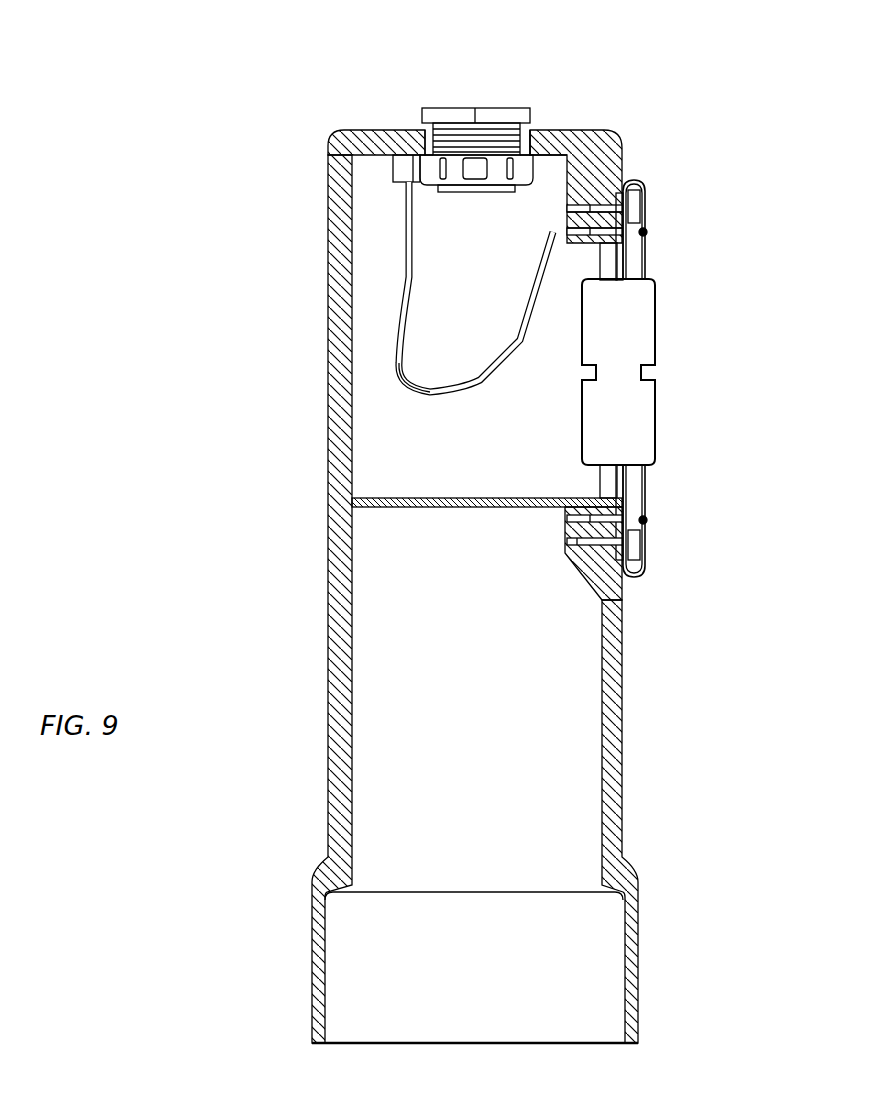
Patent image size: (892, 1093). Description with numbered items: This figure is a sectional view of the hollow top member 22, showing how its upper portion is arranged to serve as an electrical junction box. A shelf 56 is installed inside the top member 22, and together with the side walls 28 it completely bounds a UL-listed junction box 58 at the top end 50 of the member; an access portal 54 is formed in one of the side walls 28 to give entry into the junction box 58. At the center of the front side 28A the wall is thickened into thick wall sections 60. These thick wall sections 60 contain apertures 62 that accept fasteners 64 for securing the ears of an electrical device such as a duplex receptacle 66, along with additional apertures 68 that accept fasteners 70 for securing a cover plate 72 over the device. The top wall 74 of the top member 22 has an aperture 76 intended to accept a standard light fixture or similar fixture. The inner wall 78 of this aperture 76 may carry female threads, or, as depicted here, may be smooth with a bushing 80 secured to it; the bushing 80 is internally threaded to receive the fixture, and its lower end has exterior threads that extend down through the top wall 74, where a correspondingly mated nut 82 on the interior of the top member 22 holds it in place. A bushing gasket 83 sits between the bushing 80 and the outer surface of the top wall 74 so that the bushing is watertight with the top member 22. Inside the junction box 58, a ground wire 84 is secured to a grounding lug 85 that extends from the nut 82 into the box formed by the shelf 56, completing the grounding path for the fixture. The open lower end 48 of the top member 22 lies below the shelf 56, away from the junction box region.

The top member 22 is at (245, 478).
The side walls 28 is at (333, 600).
The front side 28A is at (623, 658).
The open bottom end 48 is at (347, 1043).
The top end 50 is at (593, 132).
The access portal 54 is at (603, 265).
The shelf 56 is at (397, 497).
The junction box 58 is at (450, 322).
The thick wall sections 60 is at (597, 573).
The apertures 62 is at (577, 542).
The fasteners 64 is at (637, 547).
The duplex receptacle 66 is at (640, 327).
The additional apertures 68 is at (577, 520).
The fasteners 70 is at (640, 520).
The cover plate 72 is at (643, 187).
The top wall 74 is at (372, 130).
The aperture 76 is at (558, 136).
The inner wall 78 is at (457, 118).
The bushing 80 is at (435, 115).
The nut 82 is at (497, 173).
The bushing gasket 83 is at (422, 125).
The ground wire 84 is at (392, 362).
The grounding lug 85 is at (398, 176).